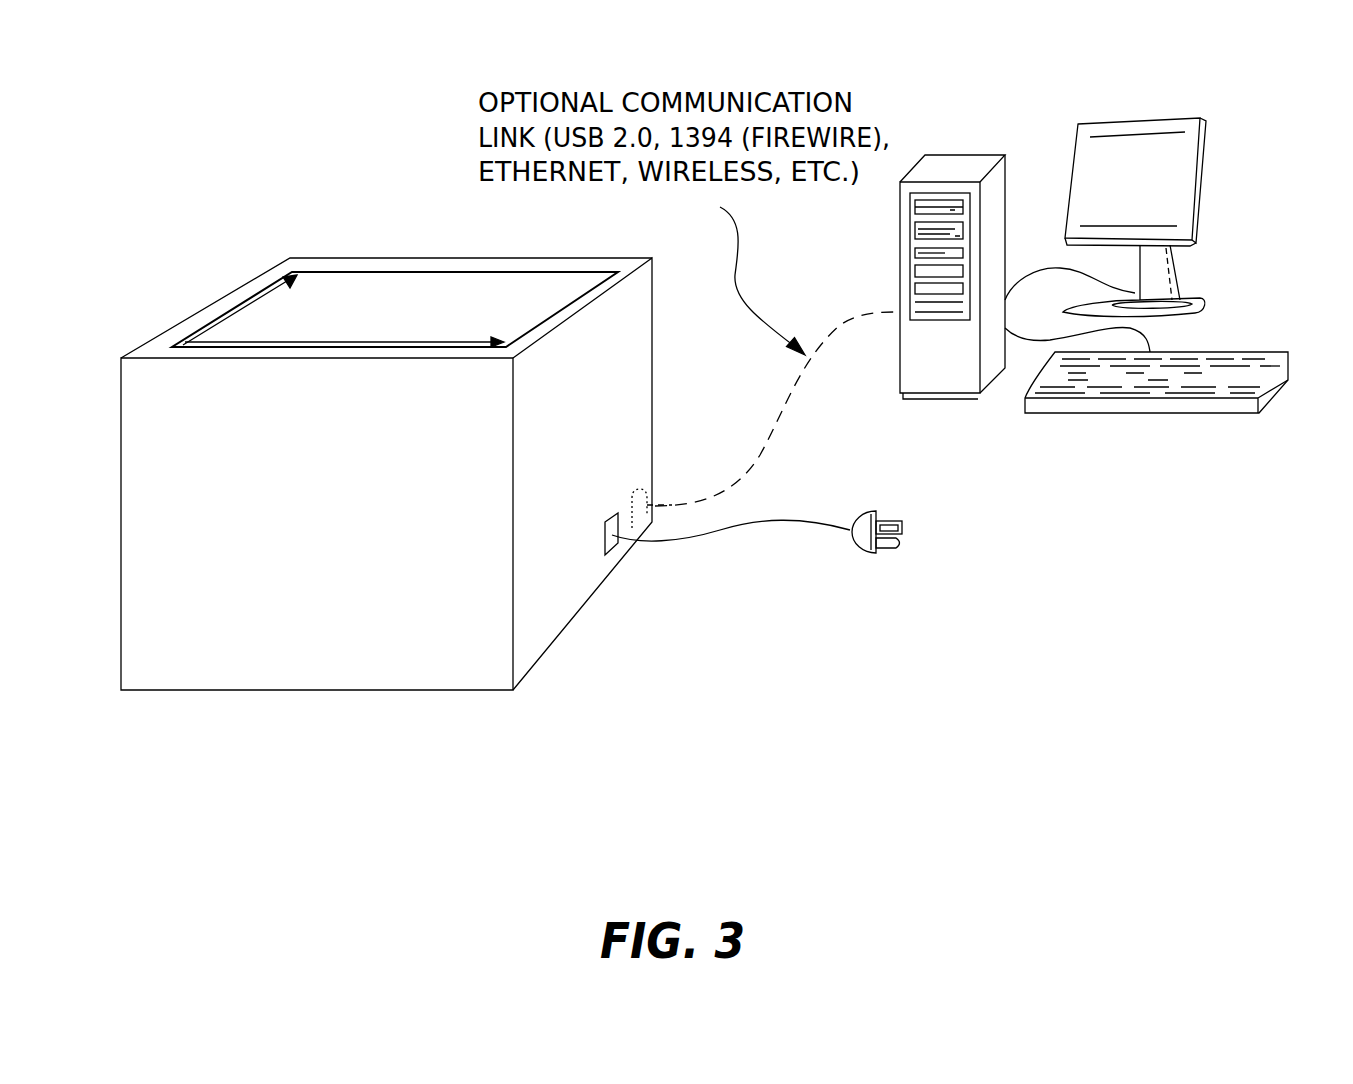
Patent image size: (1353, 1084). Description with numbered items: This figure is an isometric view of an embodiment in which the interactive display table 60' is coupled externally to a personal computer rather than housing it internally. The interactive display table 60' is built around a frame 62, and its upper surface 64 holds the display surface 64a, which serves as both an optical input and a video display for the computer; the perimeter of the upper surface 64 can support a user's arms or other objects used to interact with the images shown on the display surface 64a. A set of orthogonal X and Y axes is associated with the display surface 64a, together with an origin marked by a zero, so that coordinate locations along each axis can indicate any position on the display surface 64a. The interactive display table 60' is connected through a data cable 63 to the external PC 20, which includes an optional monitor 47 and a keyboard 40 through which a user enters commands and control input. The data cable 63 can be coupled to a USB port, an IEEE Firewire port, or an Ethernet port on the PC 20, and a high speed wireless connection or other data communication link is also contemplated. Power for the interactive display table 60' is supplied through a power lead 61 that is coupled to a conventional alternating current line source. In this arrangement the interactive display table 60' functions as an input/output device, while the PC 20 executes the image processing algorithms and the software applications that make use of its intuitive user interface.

The interactive display table 60' is at (348, 412).
The frame 62 is at (121, 481).
The upper surface 64 is at (278, 278).
The display surface 64a is at (421, 320).
The data cable 63 is at (783, 400).
The power lead 61 is at (770, 521).
The PC 20 is at (963, 155).
The monitor 47 is at (1204, 176).
The keyboard 40 is at (1252, 350).